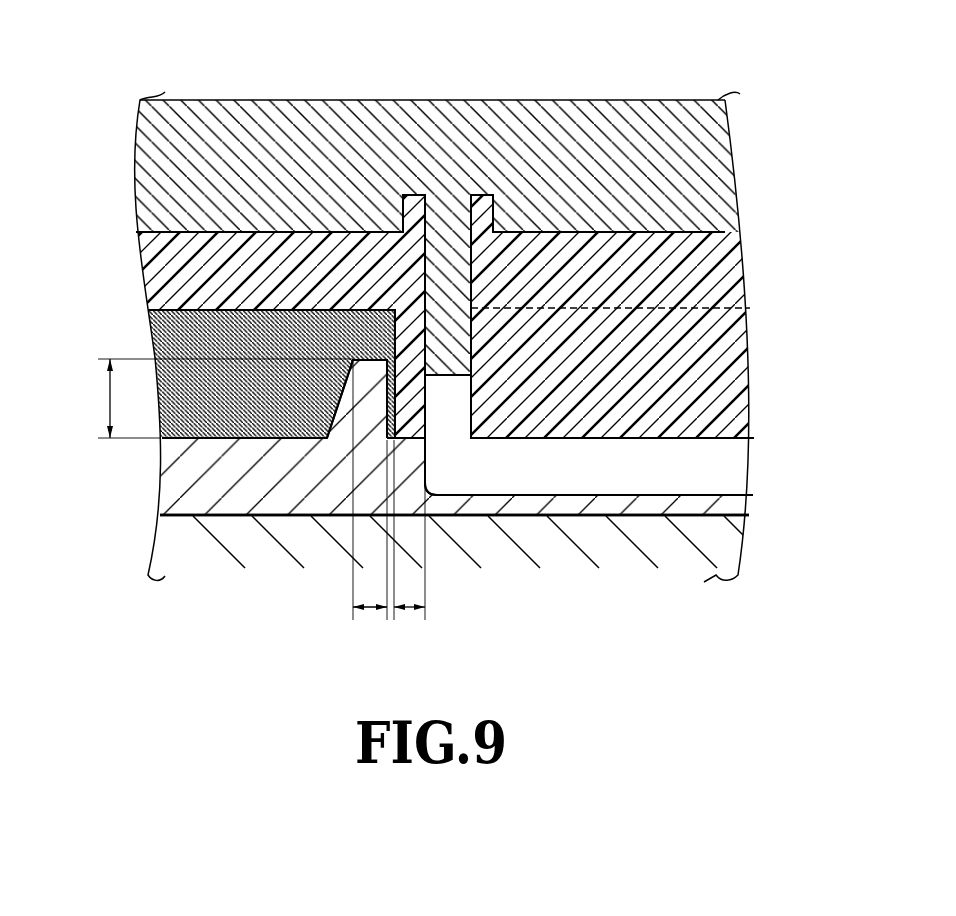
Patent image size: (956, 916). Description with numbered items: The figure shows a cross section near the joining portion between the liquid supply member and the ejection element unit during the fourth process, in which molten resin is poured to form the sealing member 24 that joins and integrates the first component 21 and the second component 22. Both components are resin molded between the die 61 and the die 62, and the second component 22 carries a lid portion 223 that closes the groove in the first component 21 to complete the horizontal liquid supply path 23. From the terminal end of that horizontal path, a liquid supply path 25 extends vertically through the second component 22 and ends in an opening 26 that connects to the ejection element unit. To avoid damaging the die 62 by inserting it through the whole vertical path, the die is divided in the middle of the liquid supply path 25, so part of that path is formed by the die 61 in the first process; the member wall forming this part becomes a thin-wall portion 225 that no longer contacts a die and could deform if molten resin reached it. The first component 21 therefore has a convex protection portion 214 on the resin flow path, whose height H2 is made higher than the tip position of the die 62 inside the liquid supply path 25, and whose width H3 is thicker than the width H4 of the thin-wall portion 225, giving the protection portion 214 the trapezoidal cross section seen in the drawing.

The first component 21 is at (178, 478).
The second component 22 is at (157, 272).
The liquid supply path 23 is at (735, 467).
The sealing member 24 is at (168, 335).
The liquid supply path 25 is at (473, 337).
The opening 26 is at (428, 212).
The die 61 is at (732, 545).
The die 62 is at (705, 170).
The lid portion 223 is at (727, 358).
The thin-wall portion 225 is at (410, 405).
The protection portion 214 is at (372, 410).
The height of the protection portion H2 is at (212, 398).
The width of the protection portion H3 is at (370, 507).
The width of the thin-wall portion H4 is at (408, 546).